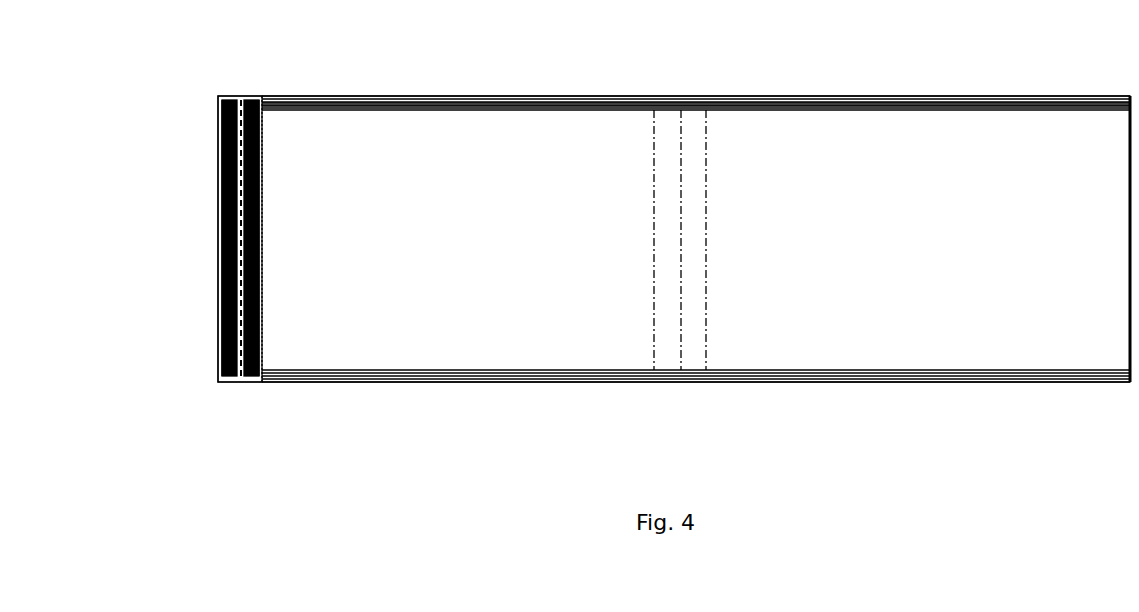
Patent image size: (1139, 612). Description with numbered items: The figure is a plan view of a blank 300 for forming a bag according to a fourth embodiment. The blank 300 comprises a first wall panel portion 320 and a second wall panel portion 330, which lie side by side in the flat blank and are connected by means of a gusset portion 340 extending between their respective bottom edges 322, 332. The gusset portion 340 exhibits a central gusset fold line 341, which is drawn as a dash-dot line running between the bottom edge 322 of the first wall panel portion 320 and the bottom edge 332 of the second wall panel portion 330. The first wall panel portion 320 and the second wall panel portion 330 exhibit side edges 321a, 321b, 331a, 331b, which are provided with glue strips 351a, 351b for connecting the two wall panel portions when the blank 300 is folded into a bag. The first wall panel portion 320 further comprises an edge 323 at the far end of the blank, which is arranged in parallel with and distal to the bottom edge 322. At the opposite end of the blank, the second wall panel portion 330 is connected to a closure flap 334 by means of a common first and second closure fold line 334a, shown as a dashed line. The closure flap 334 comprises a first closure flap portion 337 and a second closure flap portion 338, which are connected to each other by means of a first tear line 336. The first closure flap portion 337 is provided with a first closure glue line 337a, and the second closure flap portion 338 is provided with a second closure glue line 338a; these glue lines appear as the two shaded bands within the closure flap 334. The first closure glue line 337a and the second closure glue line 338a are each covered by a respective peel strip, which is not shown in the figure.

The blank 300 is at (662, 58).
The first wall panel portion 320 is at (1003, 90).
The side edge 321a is at (882, 96).
The side edge 321b is at (890, 382).
The bottom edge 322 is at (708, 350).
The edge 323 is at (1130, 135).
The second wall panel portion 330 is at (497, 90).
The side edge 331a is at (590, 96).
The side edge 331b is at (462, 382).
The bottom edge 332 is at (652, 350).
The closure flap 334 is at (229, 390).
The closure fold line 334a is at (263, 333).
The first tear line 336 is at (243, 96).
The first closure flap portion 337 is at (220, 358).
The first closure glue line 337a is at (227, 173).
The second closure flap portion 338 is at (255, 378).
The second closure glue line 338a is at (253, 212).
The gusset portion 340 is at (681, 392).
The central gusset fold line 341 is at (683, 157).
The glue strip 351a is at (382, 96).
The glue strip 351b is at (1022, 382).